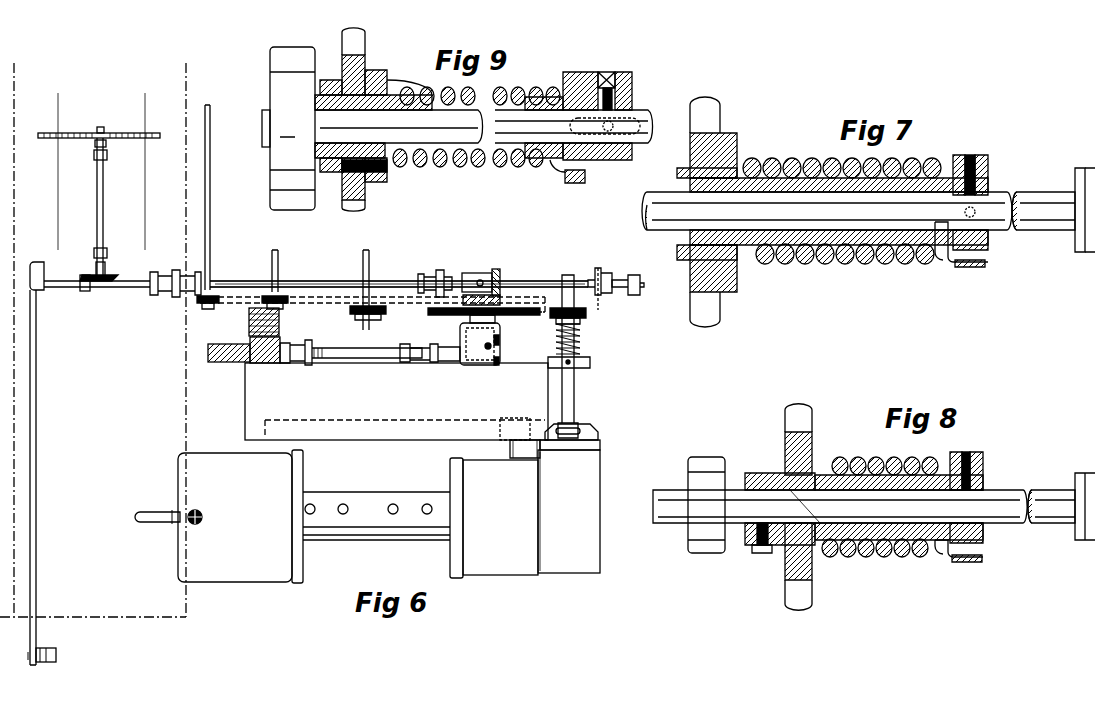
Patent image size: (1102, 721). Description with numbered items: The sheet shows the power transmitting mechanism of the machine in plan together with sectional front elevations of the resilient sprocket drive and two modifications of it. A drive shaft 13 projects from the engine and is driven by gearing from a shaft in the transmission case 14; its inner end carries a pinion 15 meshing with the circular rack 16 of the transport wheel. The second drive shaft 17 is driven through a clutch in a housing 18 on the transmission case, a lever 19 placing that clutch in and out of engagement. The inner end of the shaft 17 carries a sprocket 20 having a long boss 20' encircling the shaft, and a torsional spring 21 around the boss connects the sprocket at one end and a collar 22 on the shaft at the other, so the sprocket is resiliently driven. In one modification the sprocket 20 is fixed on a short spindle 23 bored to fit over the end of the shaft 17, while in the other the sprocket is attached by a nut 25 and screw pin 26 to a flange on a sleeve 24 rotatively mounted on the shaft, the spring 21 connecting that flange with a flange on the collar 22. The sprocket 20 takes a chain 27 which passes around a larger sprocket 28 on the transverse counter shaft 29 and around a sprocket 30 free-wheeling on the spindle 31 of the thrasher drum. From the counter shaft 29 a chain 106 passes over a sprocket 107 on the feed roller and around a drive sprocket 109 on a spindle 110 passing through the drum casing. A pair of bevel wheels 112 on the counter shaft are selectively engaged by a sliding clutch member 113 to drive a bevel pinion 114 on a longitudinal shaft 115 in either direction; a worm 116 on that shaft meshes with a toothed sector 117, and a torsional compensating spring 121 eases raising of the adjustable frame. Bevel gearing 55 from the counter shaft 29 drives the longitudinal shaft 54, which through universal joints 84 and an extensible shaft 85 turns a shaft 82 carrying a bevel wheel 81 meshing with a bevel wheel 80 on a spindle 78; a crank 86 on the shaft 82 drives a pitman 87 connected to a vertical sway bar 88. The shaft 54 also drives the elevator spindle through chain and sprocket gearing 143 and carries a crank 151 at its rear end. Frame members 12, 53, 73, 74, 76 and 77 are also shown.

In FIG. 6, the motor 12 is at (219, 516).
In FIG. 6, the drive shaft 13 is at (510, 450).
In FIG. 6, the transmission case 14 is at (525, 514).
In FIG. 6, the pinion 15 is at (512, 420).
In FIG. 6, the circular rack 16 is at (268, 420).
In FIG. 6, the second drive shaft 17 is at (575, 398).
In FIG. 9, the second drive shaft 17 is at (538, 165).
In FIG. 7, the second drive shaft 17 is at (1050, 218).
In FIG. 6, the housing 18 is at (598, 430).
In FIG. 6, the lever 19 is at (560, 450).
In FIG. 6, the sprocket 20 is at (584, 323).
In FIG. 9, the sprocket 20 is at (369, 119).
In FIG. 7, the sprocket 20 is at (720, 212).
In FIG. 8, the sprocket 20 is at (791, 503).
In FIG. 7, the boss 20' is at (832, 278).
In FIG. 6, the torsional spring 21 is at (580, 340).
In FIG. 9, the torsional spring 21 is at (470, 166).
In FIG. 7, the torsional spring 21 is at (765, 264).
In FIG. 8, the torsional spring 21 is at (862, 558).
In FIG. 9, the collar 22 is at (592, 160).
In FIG. 7, the collar 22 is at (972, 267).
In FIG. 8, the collar 22 is at (965, 562).
In FIG. 8, the short spindle 23 is at (745, 520).
In FIG. 9, the sleeve 24 is at (388, 166).
In FIG. 9, the nut 25 is at (332, 173).
In FIG. 9, the screw pin 26 is at (380, 182).
In FIG. 6, the chain 27 is at (540, 312).
In FIG. 6, the larger sprocket 28 is at (522, 308).
In FIG. 6, the counter shaft 29 is at (478, 365).
In FIG. 6, the sprocket 30 is at (357, 300).
In FIG. 6, the spindle 31 is at (370, 270).
In FIG. 6, the bar 53 is at (40, 133).
In FIG. 6, the longitudinal shaft 54 is at (470, 273).
In FIG. 6, the bevel gearing 55 is at (496, 269).
In FIG. 6, the fitting 73 is at (104, 128).
In FIG. 6, the nut 74 is at (106, 143).
In FIG. 6, the nut 76 is at (94, 155).
In FIG. 6, the rod 77 is at (103, 212).
In FIG. 6, the spindle 78 is at (96, 268).
In FIG. 6, the bevel wheel 80 is at (115, 276).
In FIG. 6, the bevel wheel 81 is at (86, 291).
In FIG. 6, the shaft 82 is at (120, 288).
In FIG. 6, the universal joints 84 is at (172, 297).
In FIG. 6, the extensible shaft 85 is at (290, 281).
In FIG. 6, the crank 86 is at (30, 262).
In FIG. 6, the pitman 87 is at (36, 375).
In FIG. 6, the vertical sway bar 88 is at (52, 648).
In FIG. 6, the chain 106 is at (330, 300).
In FIG. 6, the sprocket 107 is at (270, 280).
In FIG. 6, the drive sprocket 109 is at (205, 305).
In FIG. 6, the spindle 110 is at (211, 222).
In FIG. 6, the bevel wheels 112 is at (499, 337).
In FIG. 6, the clutch member 113 is at (492, 346).
In FIG. 6, the bevel pinion 114 is at (452, 362).
In FIG. 6, the longitudinally disposed shaft 115 is at (390, 358).
In FIG. 6, the worm 116 is at (262, 363).
In FIG. 6, the toothed sector 117 is at (215, 362).
In FIG. 6, the torsional compensating spring 121 is at (249, 320).
In FIG. 6, the chain and sprocket gearing 143 is at (604, 295).
In FIG. 6, the crank 151 is at (640, 288).